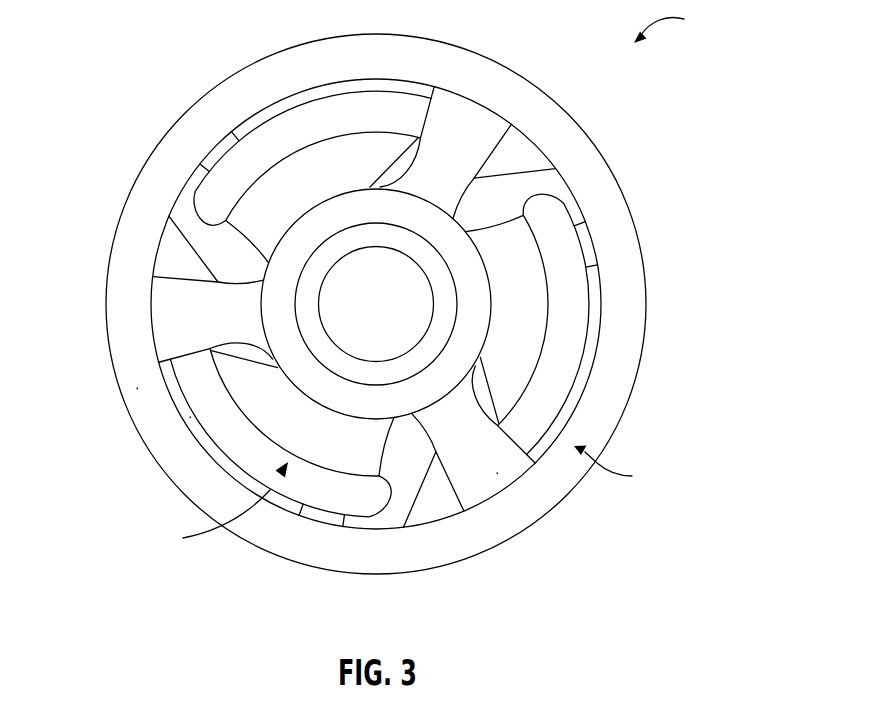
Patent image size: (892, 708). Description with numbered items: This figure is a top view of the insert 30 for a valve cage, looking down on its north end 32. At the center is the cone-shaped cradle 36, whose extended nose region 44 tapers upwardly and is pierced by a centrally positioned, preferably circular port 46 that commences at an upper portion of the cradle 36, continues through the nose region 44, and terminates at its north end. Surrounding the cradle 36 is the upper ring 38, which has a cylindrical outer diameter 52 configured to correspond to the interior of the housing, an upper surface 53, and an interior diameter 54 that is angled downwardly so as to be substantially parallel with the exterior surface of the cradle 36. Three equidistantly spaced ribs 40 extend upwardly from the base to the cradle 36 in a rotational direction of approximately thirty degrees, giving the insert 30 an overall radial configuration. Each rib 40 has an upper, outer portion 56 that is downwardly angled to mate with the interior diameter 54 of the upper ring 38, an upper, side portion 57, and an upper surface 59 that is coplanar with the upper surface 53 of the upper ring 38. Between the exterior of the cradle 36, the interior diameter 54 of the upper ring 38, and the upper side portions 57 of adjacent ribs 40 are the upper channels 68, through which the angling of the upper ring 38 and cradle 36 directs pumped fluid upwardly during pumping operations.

The insert 30 is at (673, 22).
The north end 32 is at (642, 254).
The cradle 36 is at (510, 345).
The upper ring 38 is at (616, 470).
The ribs 40 is at (387, 517).
The nose region 44 is at (308, 373).
The port 46 is at (392, 317).
The outer diameter 52 is at (105, 318).
The upper surface 53 is at (137, 388).
The interior diameter 54 is at (190, 418).
The upper, outer portion 56 is at (152, 248).
The upper, side portion 57 is at (442, 510).
The upper surface 59 is at (497, 473).
The upper channels 68 is at (221, 508).